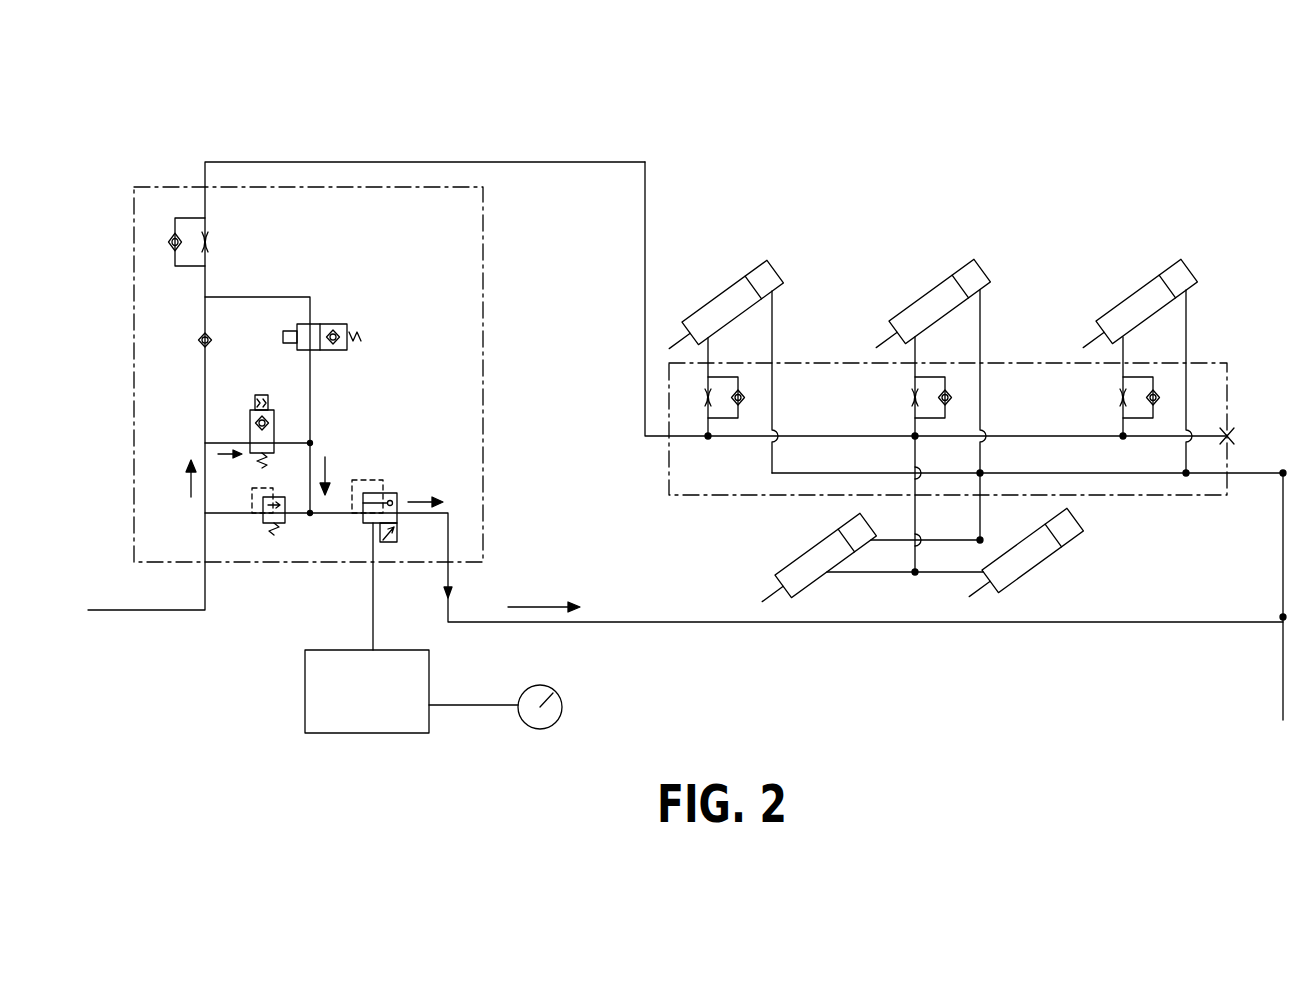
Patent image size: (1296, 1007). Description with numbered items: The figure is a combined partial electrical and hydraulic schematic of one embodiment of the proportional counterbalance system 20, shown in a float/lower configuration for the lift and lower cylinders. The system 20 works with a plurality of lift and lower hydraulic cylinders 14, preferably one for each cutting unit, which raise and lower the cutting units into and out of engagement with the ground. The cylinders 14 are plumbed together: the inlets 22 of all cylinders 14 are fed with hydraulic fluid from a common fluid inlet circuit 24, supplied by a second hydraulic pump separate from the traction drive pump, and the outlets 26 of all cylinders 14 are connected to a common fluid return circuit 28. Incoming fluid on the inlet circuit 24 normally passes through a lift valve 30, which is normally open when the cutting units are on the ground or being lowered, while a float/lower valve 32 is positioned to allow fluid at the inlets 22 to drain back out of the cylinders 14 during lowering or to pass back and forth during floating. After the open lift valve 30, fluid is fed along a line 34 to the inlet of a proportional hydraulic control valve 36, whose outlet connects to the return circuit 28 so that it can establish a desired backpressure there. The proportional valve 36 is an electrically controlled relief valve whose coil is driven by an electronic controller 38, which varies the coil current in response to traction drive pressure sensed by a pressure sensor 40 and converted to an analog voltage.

The lift and lower hydraulic cylinder 14 is at (745, 272).
The proportional counterbalance system 20 is at (735, 180).
The inlet 22 is at (712, 346).
The fluid inlet circuit 24 is at (458, 161).
The outlet 26 is at (776, 300).
The fluid return circuit 28 is at (1058, 473).
The lift valve 30 is at (250, 422).
The float/lower valve 32 is at (330, 323).
The line 34 is at (313, 447).
The proportional hydraulic control valve 36 is at (383, 492).
The electronic controller 38 is at (316, 695).
The pressure sensor 40 is at (548, 688).